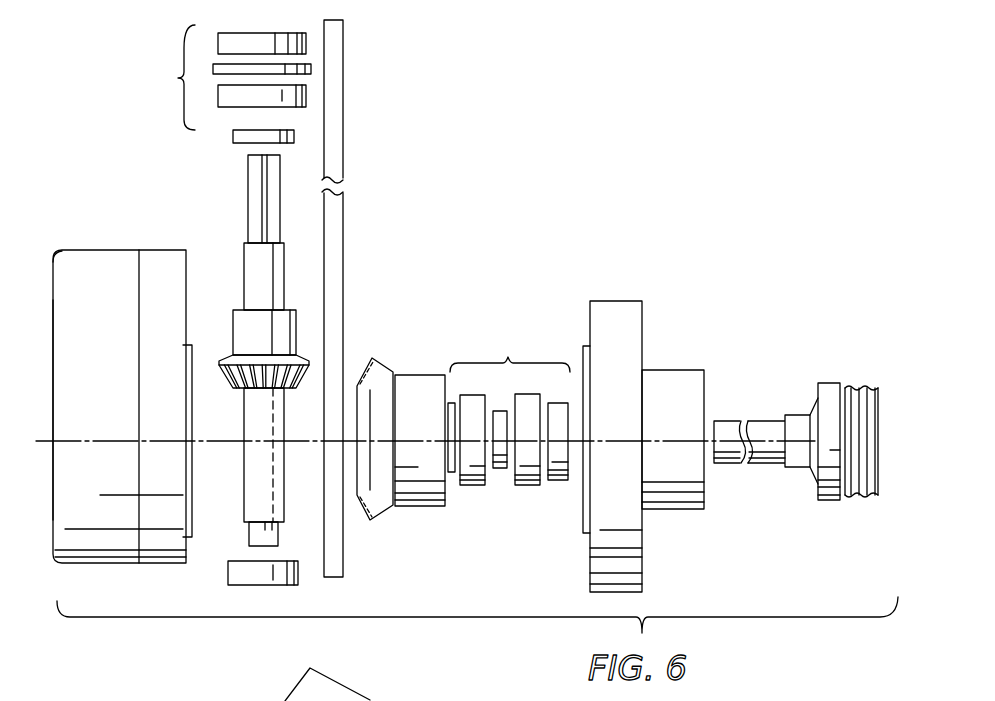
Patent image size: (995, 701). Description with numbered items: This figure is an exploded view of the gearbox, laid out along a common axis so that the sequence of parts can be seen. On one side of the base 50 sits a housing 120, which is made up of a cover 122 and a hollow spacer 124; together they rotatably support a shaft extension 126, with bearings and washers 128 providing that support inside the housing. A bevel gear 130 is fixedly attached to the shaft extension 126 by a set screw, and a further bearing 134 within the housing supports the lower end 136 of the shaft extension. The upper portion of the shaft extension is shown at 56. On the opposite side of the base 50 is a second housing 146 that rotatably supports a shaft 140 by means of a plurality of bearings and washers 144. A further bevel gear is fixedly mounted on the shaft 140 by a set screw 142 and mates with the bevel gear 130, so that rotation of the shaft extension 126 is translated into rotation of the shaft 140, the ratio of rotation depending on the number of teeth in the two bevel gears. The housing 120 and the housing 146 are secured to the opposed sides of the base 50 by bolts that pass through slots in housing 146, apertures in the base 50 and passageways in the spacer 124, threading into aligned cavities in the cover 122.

The base 50 is at (345, 228).
The drive shaft 56 is at (248, 212).
The housing 120 is at (91, 249).
The cover 122 is at (52, 272).
The hollow spacer 124 is at (165, 250).
The shaft extension 126 is at (252, 288).
The bearings and washers 128 is at (222, 77).
The bevel gear 130 is at (297, 335).
The further bearing 134 is at (286, 586).
The lower end 136 is at (248, 537).
The shaft 140 is at (760, 420).
The set screw 142 is at (422, 376).
The bearings and washers 144 is at (509, 406).
The housing 146 is at (643, 327).